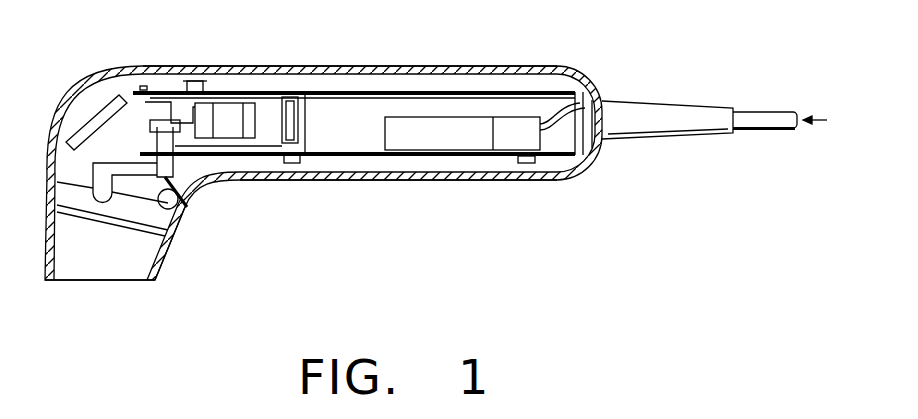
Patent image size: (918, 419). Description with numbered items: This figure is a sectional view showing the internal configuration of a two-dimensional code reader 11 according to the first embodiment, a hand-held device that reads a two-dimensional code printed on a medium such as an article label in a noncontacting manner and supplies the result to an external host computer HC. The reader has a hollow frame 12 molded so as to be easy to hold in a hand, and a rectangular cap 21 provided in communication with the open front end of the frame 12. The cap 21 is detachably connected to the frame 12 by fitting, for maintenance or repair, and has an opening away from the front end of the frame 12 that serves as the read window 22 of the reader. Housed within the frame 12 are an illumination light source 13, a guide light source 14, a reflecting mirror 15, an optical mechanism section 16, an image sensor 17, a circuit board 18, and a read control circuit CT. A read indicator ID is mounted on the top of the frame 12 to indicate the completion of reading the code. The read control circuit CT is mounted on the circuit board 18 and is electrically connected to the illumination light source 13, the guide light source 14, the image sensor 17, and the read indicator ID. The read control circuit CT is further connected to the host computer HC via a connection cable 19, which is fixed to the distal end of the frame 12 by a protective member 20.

The two-dimensional code reader 11 is at (560, 53).
The frame 12 is at (455, 43).
The illumination light source 13 is at (190, 204).
The guide light source 14 is at (57, 158).
The reflecting mirror 15 is at (100, 100).
The optical mechanism section 16 is at (236, 107).
The image sensor 17 is at (297, 132).
The circuit board 18 is at (388, 177).
The connection cable 19 is at (773, 133).
The protective member 20 is at (690, 137).
The cap 21 is at (165, 257).
The read window 22 is at (123, 282).
The read indicator ID is at (143, 66).
The read control circuit CT is at (395, 130).
The host computer HC is at (838, 121).